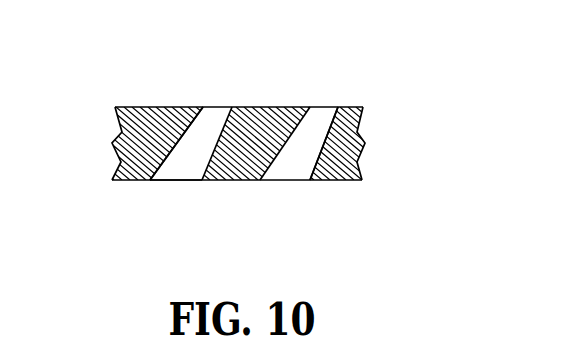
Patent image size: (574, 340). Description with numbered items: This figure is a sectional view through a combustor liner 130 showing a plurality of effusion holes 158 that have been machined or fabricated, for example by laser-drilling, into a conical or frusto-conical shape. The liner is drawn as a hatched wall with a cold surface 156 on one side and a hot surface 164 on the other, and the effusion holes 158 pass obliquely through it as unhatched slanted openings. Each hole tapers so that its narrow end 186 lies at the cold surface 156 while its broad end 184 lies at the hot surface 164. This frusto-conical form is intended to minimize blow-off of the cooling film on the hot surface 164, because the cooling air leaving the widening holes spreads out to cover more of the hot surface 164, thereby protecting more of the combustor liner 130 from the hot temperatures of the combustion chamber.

The combustor liner 130 is at (160, 133).
The narrow end 186 is at (222, 113).
The effusion holes 158 is at (323, 125).
The cold surface 156 is at (340, 110).
The hot surface 164 is at (132, 180).
The broad end 184 is at (183, 172).